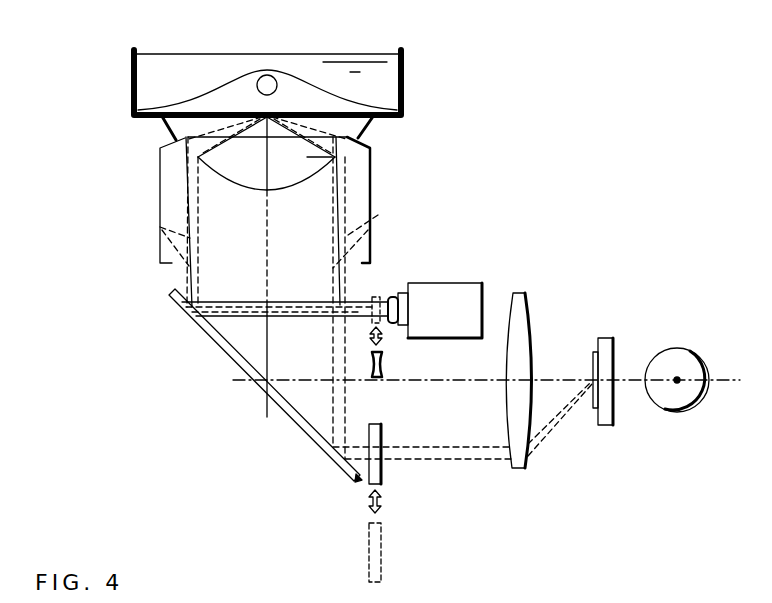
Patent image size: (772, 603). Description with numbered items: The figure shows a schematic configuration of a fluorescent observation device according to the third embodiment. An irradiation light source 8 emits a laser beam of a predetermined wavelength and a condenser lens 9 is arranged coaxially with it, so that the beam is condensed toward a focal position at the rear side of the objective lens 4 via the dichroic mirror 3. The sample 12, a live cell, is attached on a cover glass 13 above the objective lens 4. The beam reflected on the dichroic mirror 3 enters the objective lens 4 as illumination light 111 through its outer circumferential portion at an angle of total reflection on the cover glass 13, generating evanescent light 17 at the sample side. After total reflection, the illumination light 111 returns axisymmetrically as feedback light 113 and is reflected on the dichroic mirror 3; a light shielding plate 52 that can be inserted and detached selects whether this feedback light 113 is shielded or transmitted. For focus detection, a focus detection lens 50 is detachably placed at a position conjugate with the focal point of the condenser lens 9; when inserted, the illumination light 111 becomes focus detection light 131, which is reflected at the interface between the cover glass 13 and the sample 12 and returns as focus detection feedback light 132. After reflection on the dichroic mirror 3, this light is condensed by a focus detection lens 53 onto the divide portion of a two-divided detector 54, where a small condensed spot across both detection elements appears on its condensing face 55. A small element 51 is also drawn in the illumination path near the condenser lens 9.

The dichroic mirror 3 is at (190, 319).
The objective lens 4 is at (360, 141).
The irradiation light source 8 is at (447, 283).
The condenser lens 9 is at (393, 297).
The sample 12 is at (293, 86).
The cover glass 13 is at (405, 90).
The evanescent light 17 is at (253, 108).
The focus detection lens 50 is at (383, 360).
The movable aperture 51 is at (376, 297).
The light shielding plate 52 is at (382, 542).
The focus detection lens 53 is at (518, 293).
The two-divided detector 54 is at (608, 338).
The condensing face 55 is at (678, 348).
The illumination light 111 is at (196, 191).
The feedback light 113 is at (345, 187).
The focus detection light 131 is at (160, 227).
The focus detection feedback light 132 is at (378, 215).